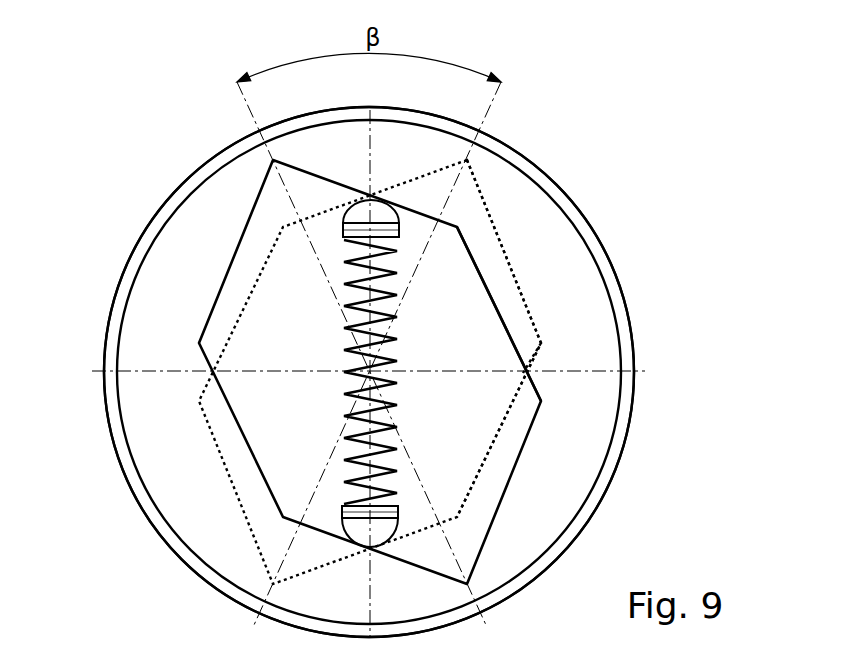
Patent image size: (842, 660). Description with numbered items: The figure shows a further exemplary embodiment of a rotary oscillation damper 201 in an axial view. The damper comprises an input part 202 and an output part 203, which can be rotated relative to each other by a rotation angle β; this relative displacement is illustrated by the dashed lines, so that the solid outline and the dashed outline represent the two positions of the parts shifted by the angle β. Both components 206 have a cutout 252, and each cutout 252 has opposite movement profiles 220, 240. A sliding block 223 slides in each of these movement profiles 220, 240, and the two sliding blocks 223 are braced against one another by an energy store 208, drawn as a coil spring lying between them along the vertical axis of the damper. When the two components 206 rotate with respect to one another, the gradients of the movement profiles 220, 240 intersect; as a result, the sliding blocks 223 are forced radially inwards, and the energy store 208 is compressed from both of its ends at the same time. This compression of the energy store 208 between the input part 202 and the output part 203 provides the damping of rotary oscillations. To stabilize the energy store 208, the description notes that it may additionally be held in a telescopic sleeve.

The rotary oscillation damper 201 is at (569, 159).
The input part 202 is at (135, 347).
The output part 203 is at (503, 282).
The components 206 is at (141, 208).
The energy store 208 is at (355, 288).
The movement profile 220 is at (309, 180).
The sliding block 223 is at (382, 217).
The movement profile 240 is at (247, 457).
The cutout 252 is at (512, 343).